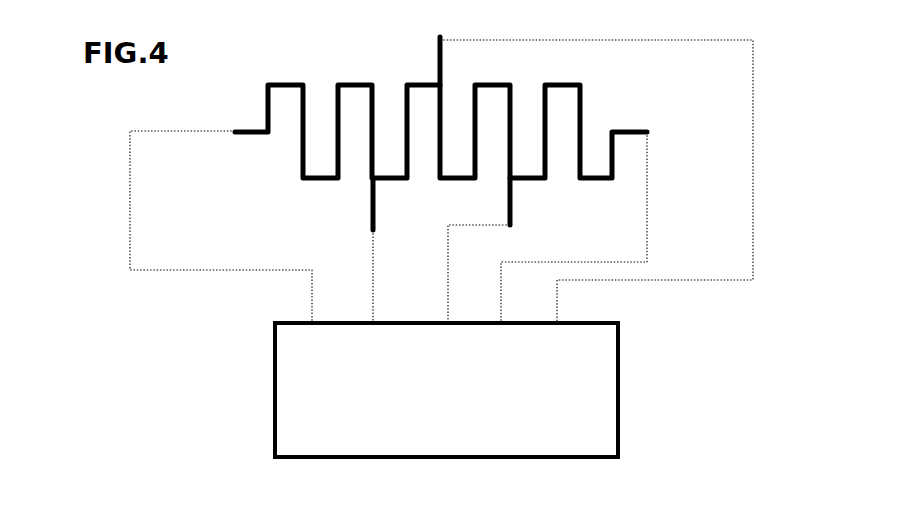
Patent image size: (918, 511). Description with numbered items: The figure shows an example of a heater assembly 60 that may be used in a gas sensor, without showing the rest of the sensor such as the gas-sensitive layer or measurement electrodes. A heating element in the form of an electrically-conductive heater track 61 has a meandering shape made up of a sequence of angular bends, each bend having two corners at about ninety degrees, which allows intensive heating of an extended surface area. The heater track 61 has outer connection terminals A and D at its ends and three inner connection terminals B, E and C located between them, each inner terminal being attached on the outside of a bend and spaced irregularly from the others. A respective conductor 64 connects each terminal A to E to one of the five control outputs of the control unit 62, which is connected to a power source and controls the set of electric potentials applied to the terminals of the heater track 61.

The heater assembly 60 is at (165, 305).
The heater track 61 is at (345, 83).
The control unit 62 is at (434, 428).
The conductors 64 is at (690, 280).